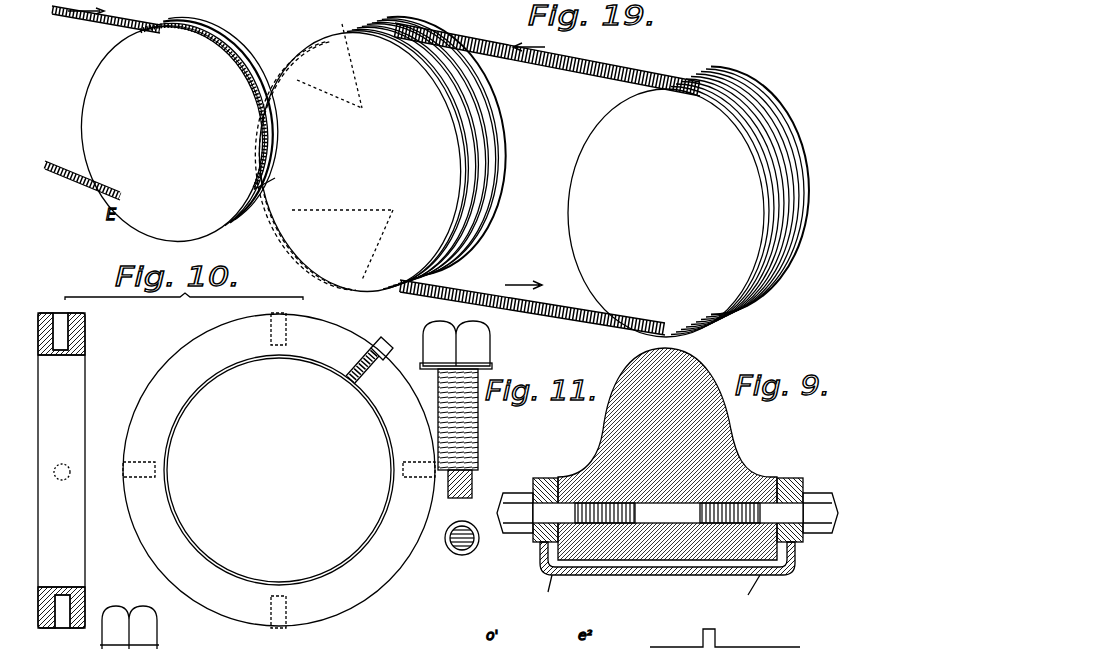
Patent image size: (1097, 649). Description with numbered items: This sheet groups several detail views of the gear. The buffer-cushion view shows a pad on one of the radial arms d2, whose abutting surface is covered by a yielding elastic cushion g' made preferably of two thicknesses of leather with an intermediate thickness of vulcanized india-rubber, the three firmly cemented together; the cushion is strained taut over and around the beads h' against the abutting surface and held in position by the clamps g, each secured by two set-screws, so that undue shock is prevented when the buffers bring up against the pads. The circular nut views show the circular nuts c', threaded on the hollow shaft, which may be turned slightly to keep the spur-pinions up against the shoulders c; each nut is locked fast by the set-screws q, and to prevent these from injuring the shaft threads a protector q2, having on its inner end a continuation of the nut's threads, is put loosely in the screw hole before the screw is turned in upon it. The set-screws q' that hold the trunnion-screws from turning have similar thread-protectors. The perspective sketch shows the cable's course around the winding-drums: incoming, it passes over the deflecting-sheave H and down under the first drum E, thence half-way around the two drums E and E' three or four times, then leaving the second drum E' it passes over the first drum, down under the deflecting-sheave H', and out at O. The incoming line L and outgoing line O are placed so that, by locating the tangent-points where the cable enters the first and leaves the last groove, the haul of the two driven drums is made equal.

In FIG. 19, the rope leaving pulley L is at (120, 28).
In FIG. 19, the outgoing line O is at (72, 166).
In FIG. 19, the deflecting-sheave H is at (172, 134).
In FIG. 19, the deflecting-sheave H' is at (217, 121).
In FIG. 19, the first drum E is at (374, 161).
In FIG. 19, the second drum E' is at (688, 202).
In FIG. 10, the shoulders c is at (69, 470).
In FIG. 10, the circular nuts c' is at (260, 470).
In FIG. 10, the set-screws q is at (376, 347).
In FIG. 11, the set-screws q is at (470, 409).
In FIG. 10, the set-screws q' is at (144, 627).
In FIG. 11, the protector q2 is at (475, 490).
In FIG. 9, the radial arms d2 is at (667, 454).
In FIG. 9, the clamps g is at (670, 522).
In FIG. 9, the elastic cushion g' is at (667, 572).
In FIG. 9, the beads h' is at (654, 595).